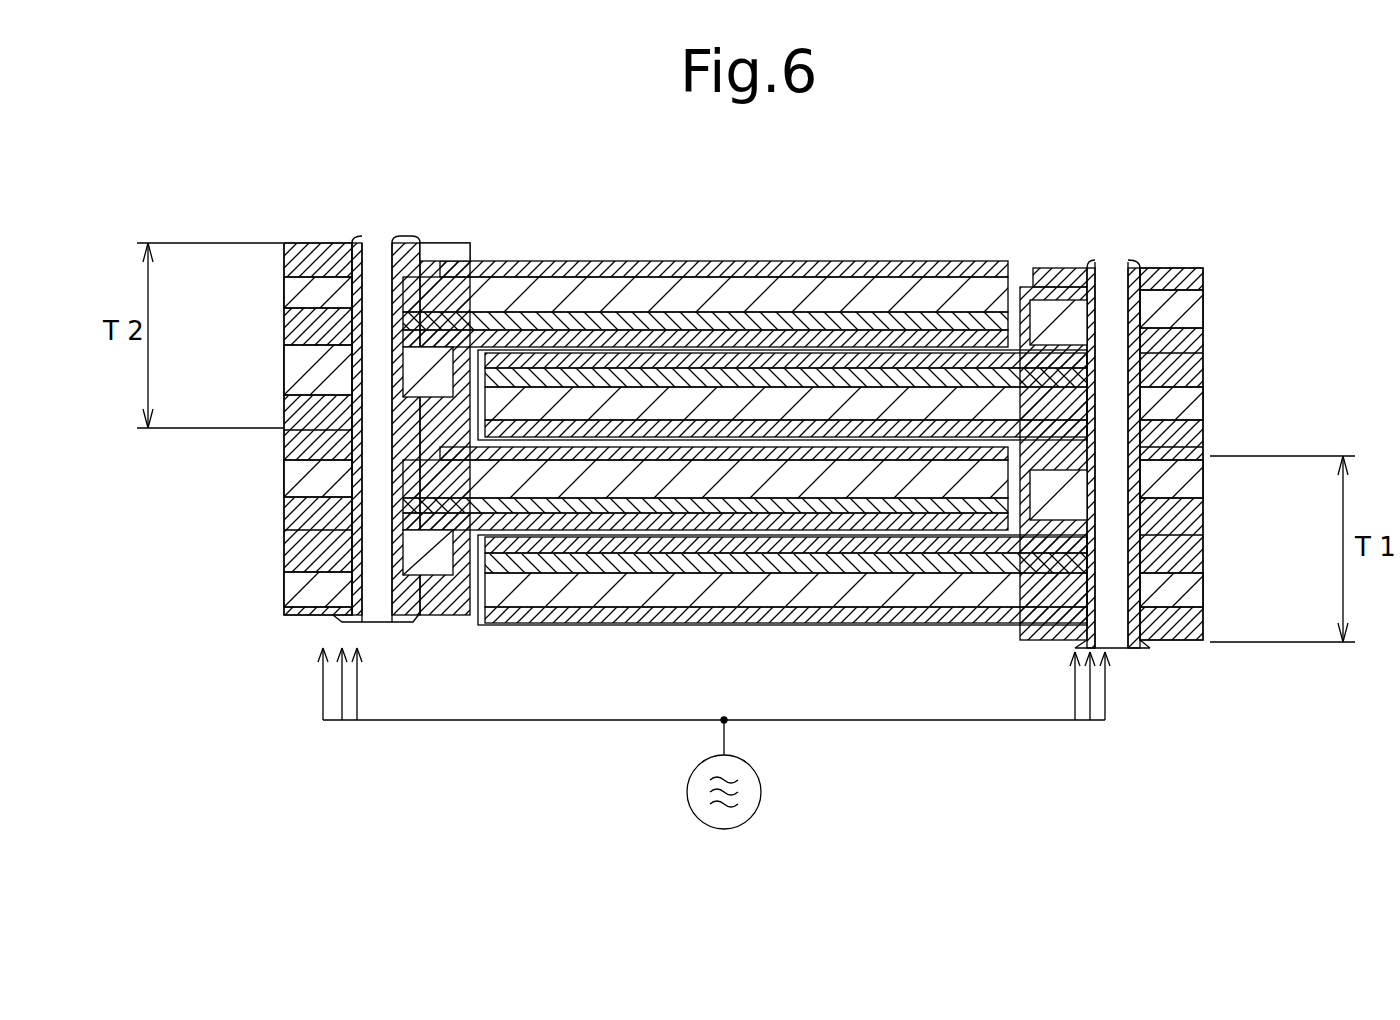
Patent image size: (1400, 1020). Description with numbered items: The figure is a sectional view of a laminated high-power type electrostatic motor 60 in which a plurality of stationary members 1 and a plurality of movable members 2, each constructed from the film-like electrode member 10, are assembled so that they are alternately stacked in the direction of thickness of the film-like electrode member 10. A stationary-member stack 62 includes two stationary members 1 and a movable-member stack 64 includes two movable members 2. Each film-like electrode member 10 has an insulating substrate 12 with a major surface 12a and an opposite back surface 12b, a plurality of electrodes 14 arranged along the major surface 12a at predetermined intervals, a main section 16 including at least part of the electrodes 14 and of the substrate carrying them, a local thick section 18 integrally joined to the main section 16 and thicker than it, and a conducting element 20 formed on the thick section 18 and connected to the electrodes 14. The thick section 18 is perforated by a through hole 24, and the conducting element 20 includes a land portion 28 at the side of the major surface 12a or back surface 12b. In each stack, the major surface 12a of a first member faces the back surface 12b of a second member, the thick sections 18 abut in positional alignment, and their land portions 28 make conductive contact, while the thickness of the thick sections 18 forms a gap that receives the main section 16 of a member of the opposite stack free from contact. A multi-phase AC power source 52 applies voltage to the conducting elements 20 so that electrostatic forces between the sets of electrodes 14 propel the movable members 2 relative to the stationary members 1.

The stationary member 1 is at (745, 440).
The movable member 2 is at (782, 440).
The film-like electrode member 10 is at (708, 440).
The insulating substrate 12 is at (707, 292).
The major surface 12a is at (660, 332).
The back surface 12b is at (838, 452).
The electrodes 14 is at (905, 316).
The main section 16 is at (950, 260).
The thick section 18 is at (285, 320).
The conducting element 20 is at (352, 243).
The through hole 24 is at (387, 250).
The land portion 28 is at (345, 442).
The multi-phase AC power source 52 is at (762, 790).
The laminated high-power type electrostatic motor 60 is at (714, 739).
The stationary-member stack 62 is at (1225, 435).
The movable-member stack 64 is at (270, 455).